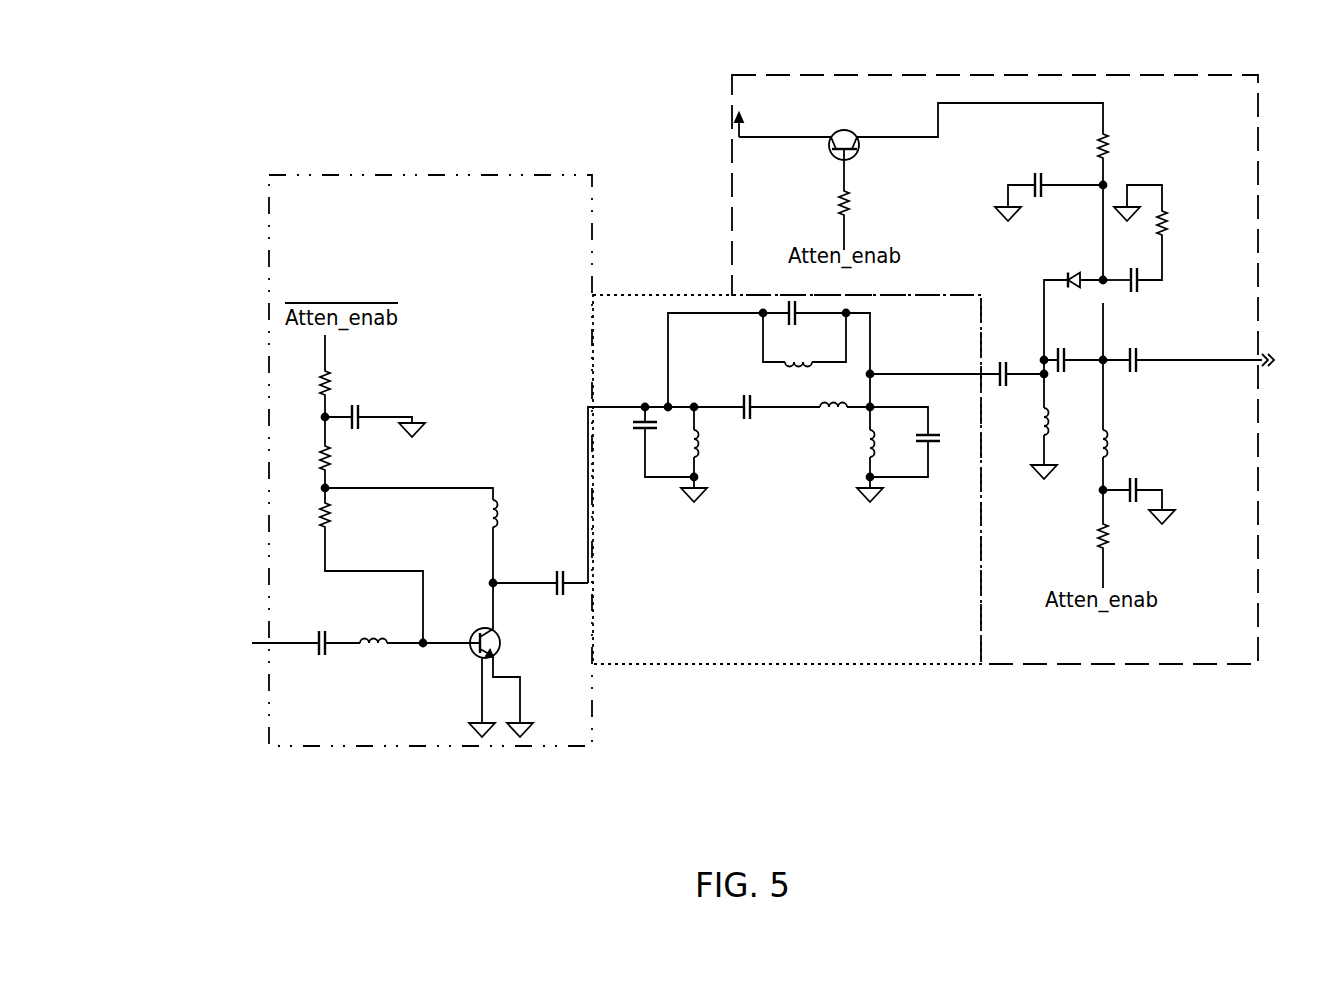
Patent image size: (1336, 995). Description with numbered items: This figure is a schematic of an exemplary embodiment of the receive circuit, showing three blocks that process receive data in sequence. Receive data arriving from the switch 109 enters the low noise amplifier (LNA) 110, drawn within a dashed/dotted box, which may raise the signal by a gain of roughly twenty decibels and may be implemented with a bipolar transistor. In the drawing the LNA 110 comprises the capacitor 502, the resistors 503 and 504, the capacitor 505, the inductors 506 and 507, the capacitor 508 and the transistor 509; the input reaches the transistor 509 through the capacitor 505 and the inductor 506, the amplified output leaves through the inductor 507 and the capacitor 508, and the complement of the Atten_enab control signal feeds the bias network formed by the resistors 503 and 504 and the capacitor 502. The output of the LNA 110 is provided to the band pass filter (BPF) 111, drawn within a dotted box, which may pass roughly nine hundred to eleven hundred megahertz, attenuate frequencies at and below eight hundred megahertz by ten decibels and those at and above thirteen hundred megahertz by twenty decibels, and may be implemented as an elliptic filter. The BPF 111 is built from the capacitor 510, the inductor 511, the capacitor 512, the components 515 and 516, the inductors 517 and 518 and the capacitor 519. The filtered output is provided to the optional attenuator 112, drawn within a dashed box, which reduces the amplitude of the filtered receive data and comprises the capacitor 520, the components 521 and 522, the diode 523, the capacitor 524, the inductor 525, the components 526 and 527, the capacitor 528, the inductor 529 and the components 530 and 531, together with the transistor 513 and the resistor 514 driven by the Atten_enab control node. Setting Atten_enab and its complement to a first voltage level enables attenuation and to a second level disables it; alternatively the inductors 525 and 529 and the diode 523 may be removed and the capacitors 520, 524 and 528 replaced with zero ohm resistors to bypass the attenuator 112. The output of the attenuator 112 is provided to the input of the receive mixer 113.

The switch 109 is at (242, 644).
The low noise amplifier (LNA) 110 is at (430, 439).
The band pass filter (BPF) 111 is at (787, 504).
The attenuator 112 is at (995, 350).
The receive mixer 113 is at (1295, 380).
The capacitor 502 is at (375, 414).
The resistor 503 is at (348, 461).
The resistor 504 is at (348, 518).
The capacitor 505 is at (322, 626).
The inductor 506 is at (374, 659).
The inductor 507 is at (514, 513).
The capacitor 508 is at (540, 569).
The transistor 509 is at (505, 682).
The capacitor 510 is at (649, 442).
The inductor 511 is at (713, 454).
The capacitor 512 is at (735, 397).
The transistor 513 is at (823, 153).
The resistor 514 is at (825, 203).
The filter component 515 is at (795, 326).
The filter component 516 is at (804, 355).
The inductor 517 is at (834, 427).
The inductor 518 is at (884, 454).
The capacitor 519 is at (920, 440).
The capacitor 520 is at (957, 358).
The attenuator component 521 is at (1085, 145).
The attenuator component 522 is at (1049, 184).
The diode 523 is at (1073, 322).
The capacitor 524 is at (1073, 351).
The inductor 525 is at (1028, 443).
The attenuator component 526 is at (1161, 232).
The attenuator component 527 is at (1143, 290).
The capacitor 528 is at (1182, 351).
The inductor 529 is at (1126, 435).
The attenuator component 530 is at (1140, 491).
The attenuator component 531 is at (1081, 535).